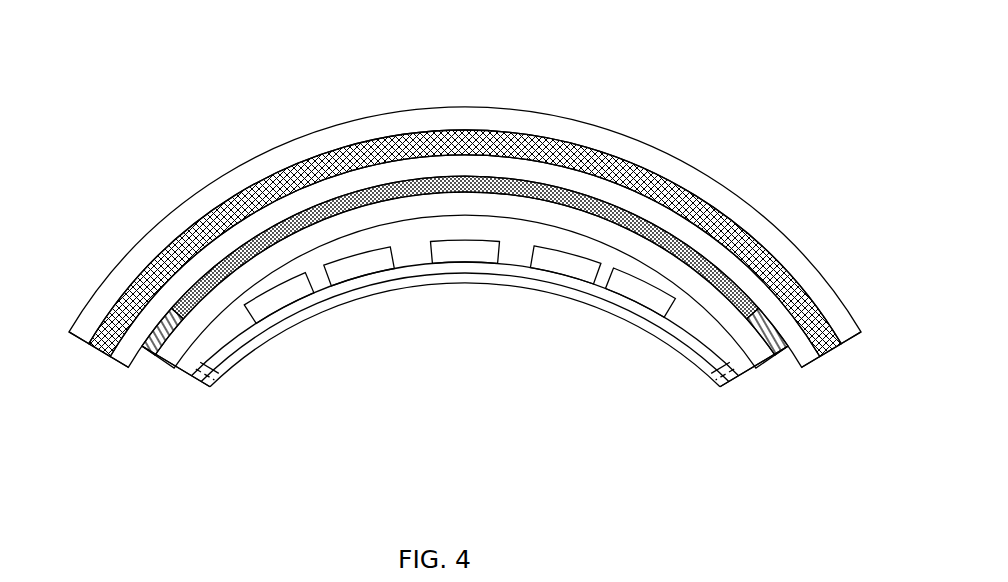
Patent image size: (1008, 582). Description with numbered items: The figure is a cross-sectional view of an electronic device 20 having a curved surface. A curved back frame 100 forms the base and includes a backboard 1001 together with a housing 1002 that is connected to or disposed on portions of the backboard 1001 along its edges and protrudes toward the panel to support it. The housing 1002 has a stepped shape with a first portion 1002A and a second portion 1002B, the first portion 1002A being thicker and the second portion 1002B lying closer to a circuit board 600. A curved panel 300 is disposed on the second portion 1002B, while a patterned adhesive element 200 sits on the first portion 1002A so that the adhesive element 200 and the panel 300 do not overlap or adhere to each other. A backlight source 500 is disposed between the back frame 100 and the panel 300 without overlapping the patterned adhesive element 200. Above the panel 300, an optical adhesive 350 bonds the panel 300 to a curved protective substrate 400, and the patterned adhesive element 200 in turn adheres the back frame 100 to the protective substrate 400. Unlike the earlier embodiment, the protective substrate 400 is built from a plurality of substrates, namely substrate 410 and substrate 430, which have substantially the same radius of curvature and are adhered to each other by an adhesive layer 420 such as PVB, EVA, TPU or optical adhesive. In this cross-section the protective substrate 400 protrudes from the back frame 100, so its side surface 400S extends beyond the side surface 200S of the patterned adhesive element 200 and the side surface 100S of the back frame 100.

The electronic device 20 is at (108, 76).
The back frame 100 is at (760, 440).
The backboard 1001 is at (640, 326).
The housing 1002 is at (722, 372).
The first portion 1002A is at (206, 362).
The second portion 1002B is at (253, 356).
The side surface of the back frame 100S is at (179, 378).
The patterned adhesive element 200 is at (796, 326).
The side surface of the patterned adhesive element 200S is at (143, 344).
The panel 300 is at (455, 205).
The optical adhesive 350 is at (381, 188).
The protective substrate 400 is at (812, 116).
The substrate 410 is at (551, 172).
The adhesive layer 420 is at (650, 186).
The substrate 430 is at (741, 208).
The side surface of the protective substrate 400S is at (76, 340).
The backlight source 500 is at (272, 292).
The circuit board 600 is at (418, 268).